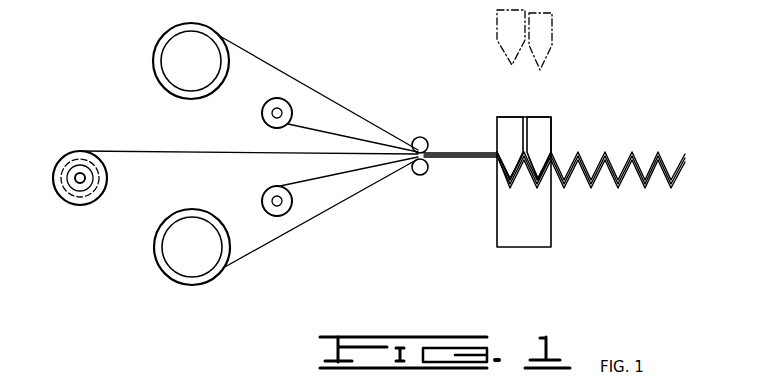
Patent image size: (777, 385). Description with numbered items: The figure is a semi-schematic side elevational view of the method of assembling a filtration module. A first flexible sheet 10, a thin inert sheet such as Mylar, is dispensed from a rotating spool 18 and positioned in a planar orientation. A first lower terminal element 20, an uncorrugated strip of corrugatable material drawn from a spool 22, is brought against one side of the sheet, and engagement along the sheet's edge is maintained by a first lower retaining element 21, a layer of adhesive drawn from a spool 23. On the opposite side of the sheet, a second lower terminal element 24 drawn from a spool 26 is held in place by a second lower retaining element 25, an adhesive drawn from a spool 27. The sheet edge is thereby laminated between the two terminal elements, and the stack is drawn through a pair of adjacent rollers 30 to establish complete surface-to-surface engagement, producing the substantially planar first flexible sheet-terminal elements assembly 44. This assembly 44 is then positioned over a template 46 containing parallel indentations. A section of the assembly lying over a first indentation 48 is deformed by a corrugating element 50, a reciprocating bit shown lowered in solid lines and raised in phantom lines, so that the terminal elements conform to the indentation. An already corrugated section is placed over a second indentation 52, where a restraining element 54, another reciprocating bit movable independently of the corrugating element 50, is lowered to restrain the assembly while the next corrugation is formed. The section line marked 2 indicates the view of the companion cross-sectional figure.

The section line 2- 2 is at (450, 100).
The first flexible sheet 10 is at (153, 150).
The spool 18 is at (64, 200).
The first lower terminal element 20 is at (318, 220).
The first lower retaining element 21 is at (298, 182).
The spool 22 is at (160, 272).
The spool 23 is at (262, 201).
The second lower terminal element 24 is at (312, 86).
The second lower retaining element 25 is at (302, 132).
The spool 26 is at (174, 24).
The spool 27 is at (262, 113).
The pair of adjacent rollers 30 is at (421, 137).
The first flexible sheet-terminal elements assembly 44 is at (482, 158).
The template 46 is at (528, 247).
The first indentation 48 is at (516, 178).
The corrugating element 50 is at (497, 24).
The second indentation 52 is at (540, 178).
The restraining element 54 is at (555, 27).